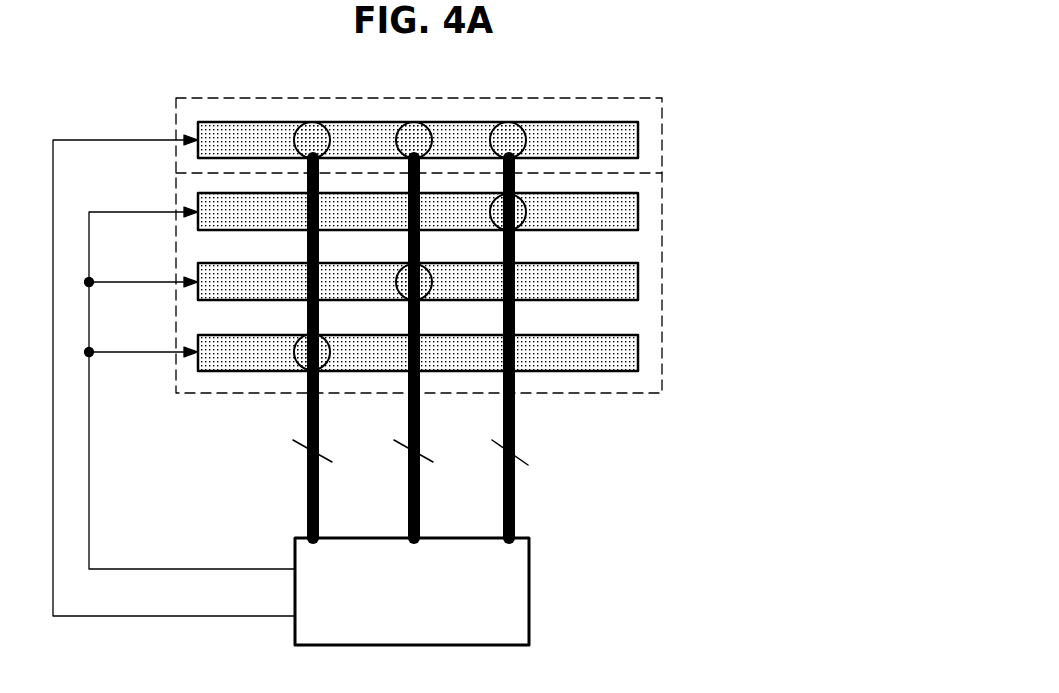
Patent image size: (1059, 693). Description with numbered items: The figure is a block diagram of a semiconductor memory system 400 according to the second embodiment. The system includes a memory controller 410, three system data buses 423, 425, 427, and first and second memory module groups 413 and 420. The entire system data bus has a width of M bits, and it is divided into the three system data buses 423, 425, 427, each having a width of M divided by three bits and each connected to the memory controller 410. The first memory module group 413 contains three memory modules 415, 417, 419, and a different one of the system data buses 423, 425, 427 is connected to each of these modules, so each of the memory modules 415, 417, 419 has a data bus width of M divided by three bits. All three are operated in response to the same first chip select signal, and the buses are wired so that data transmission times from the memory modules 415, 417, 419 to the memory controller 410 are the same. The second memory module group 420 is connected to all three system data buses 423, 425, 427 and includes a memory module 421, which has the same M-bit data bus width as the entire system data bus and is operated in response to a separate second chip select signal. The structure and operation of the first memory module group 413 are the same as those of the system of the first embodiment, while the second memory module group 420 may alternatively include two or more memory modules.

The semiconductor memory system 400 is at (644, 90).
The memory controller 410 is at (529, 594).
The first memory module group 413 is at (627, 393).
The memory module 415 is at (638, 352).
The memory module 417 is at (638, 283).
The memory module 419 is at (638, 212).
The second memory module group 420 is at (420, 97).
The memory module 421 is at (638, 141).
The system data bus 423 is at (307, 520).
The system data bus 425 is at (408, 413).
The system data bus 427 is at (515, 518).